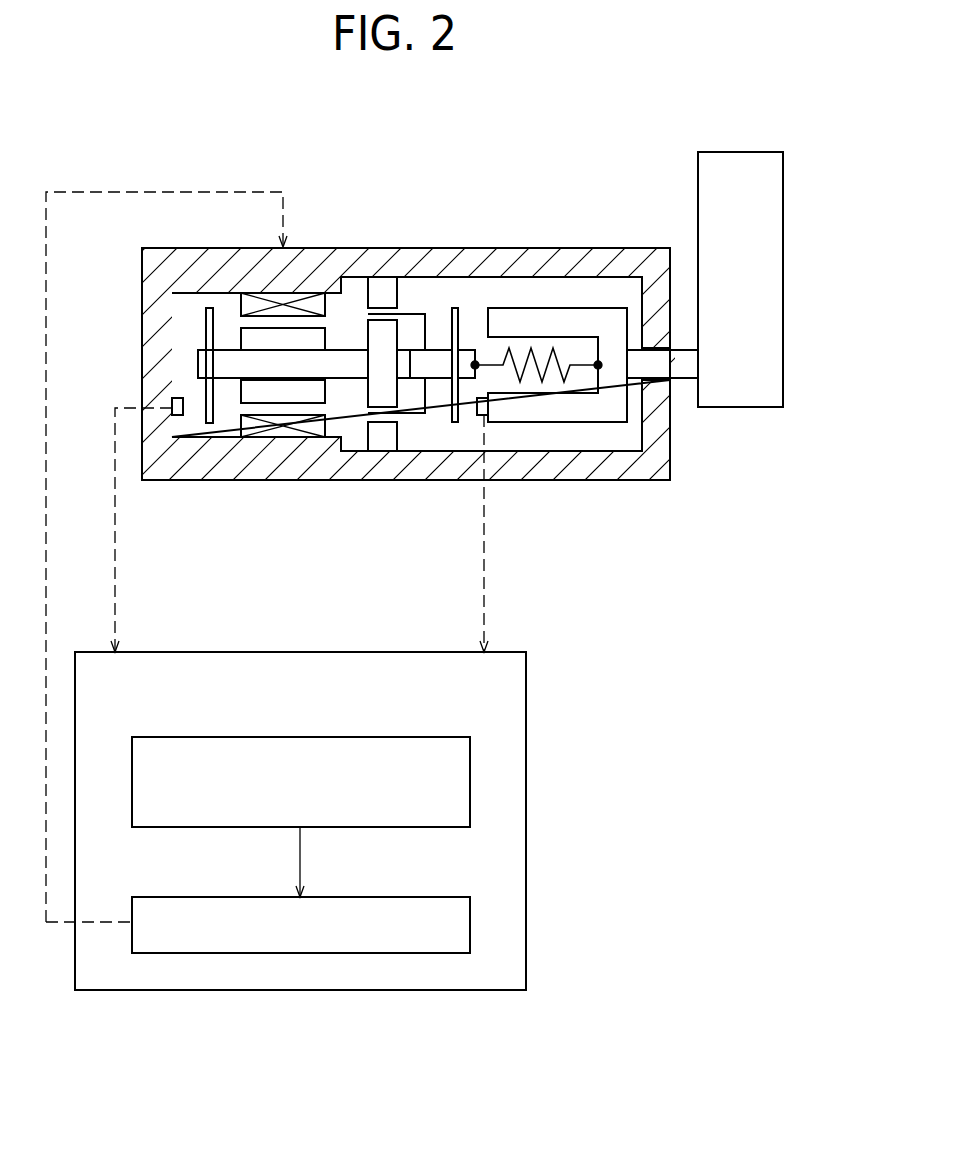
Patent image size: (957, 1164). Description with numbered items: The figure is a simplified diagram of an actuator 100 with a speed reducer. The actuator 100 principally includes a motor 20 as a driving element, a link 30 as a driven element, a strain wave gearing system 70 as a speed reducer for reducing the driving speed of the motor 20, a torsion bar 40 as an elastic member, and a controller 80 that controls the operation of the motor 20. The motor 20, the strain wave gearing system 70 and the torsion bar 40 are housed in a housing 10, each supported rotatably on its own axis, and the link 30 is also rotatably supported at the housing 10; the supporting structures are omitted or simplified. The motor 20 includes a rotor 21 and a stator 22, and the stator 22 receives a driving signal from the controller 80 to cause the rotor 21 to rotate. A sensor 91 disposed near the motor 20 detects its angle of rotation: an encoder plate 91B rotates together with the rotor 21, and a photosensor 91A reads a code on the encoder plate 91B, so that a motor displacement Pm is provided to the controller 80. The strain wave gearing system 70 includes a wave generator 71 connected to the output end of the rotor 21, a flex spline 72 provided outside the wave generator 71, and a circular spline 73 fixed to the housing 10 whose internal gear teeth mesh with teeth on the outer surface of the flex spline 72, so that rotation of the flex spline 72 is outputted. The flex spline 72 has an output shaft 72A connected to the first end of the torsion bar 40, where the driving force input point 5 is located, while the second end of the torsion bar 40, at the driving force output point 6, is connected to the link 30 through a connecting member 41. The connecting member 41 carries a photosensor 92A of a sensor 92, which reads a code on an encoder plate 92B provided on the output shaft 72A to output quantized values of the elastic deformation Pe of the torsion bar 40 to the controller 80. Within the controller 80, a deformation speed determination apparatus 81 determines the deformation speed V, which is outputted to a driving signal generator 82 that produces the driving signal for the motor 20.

The actuator 100 is at (503, 152).
The housing 10 is at (620, 240).
The motor 20 is at (310, 243).
The rotor 21 is at (250, 335).
The stator 22 is at (260, 298).
The link 30 is at (755, 150).
The torsion bar 40 is at (543, 347).
The connecting member 41 is at (608, 412).
The driving force input point 5 is at (474, 361).
The driving force output point 6 is at (598, 361).
The strain wave gearing system 70 is at (412, 233).
The wave generator 71 is at (373, 337).
The flex spline 72 is at (418, 312).
The output shaft 72A is at (437, 374).
The circular spline 73 is at (386, 286).
The controller 80 is at (362, 650).
The deformation speed determination apparatus 81 is at (413, 737).
The driving signal generator 82 is at (413, 897).
The sensor 91 is at (247, 538).
The photosensor 91A is at (178, 416).
The encoder plate 91B is at (210, 424).
The sensor 92 is at (613, 551).
The photosensor 92A is at (489, 411).
The encoder plate 92B is at (457, 423).